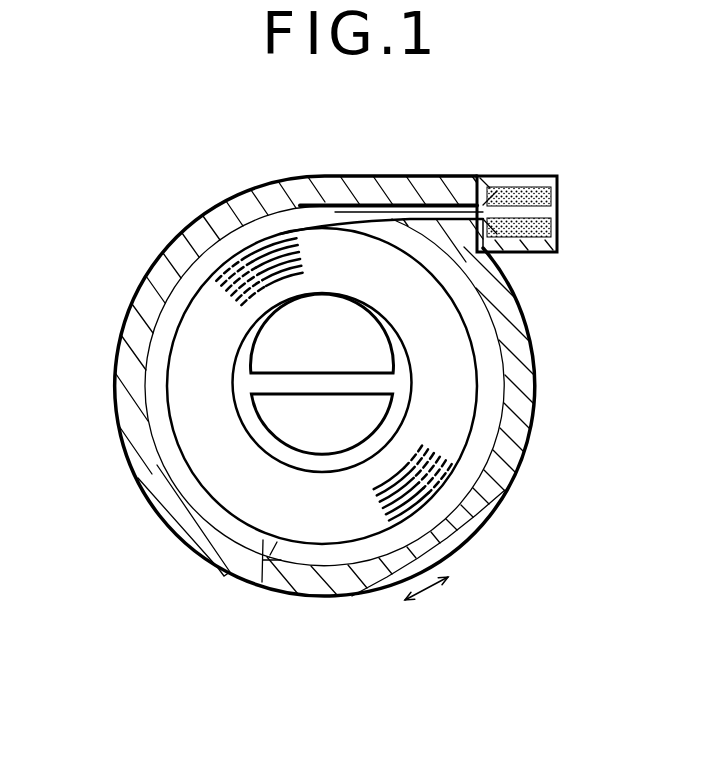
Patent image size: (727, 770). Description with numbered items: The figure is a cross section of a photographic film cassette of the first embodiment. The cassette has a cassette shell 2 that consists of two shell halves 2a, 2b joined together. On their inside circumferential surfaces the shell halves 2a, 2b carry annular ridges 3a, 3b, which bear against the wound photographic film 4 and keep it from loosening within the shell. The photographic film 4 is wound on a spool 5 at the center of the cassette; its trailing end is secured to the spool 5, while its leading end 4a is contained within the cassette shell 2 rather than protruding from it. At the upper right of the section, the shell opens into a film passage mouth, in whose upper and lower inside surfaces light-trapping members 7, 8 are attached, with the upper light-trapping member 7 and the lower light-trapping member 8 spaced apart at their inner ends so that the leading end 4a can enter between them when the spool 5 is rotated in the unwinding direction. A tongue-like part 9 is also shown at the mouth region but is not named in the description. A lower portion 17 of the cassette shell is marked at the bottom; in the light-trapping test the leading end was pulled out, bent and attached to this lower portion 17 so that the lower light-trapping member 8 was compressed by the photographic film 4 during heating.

The cassette shell 2 is at (516, 477).
The shell half 2a is at (215, 573).
The shell half 2b is at (313, 600).
The annular ridge 3a is at (170, 467).
The annular ridge 3b is at (488, 412).
The photographic film 4 is at (200, 312).
The leading end 4a is at (487, 197).
The spool 5 is at (272, 461).
The light-trapping member 7 is at (550, 199).
The light-trapping member 8 is at (550, 222).
The tongue 9 is at (391, 229).
The lower portion 17 is at (427, 586).